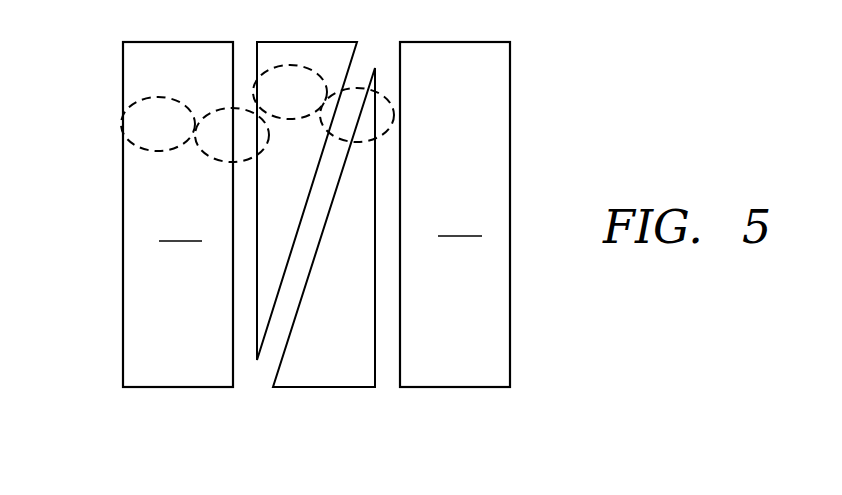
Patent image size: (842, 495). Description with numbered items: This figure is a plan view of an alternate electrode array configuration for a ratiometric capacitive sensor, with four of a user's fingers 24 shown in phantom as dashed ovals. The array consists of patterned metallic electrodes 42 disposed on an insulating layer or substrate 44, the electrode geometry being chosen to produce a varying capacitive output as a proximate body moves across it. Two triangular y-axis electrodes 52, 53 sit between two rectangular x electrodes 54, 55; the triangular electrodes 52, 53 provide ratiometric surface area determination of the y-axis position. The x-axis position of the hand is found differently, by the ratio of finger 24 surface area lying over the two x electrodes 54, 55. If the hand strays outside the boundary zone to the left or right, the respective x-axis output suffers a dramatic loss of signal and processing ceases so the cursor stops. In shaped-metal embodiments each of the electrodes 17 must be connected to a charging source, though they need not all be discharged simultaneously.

The electrodes 17 is at (518, 153).
The fingers 24 is at (126, 139).
The patterned metallic electrodes 42 is at (388, 35).
The insulating layer or substrate 44 is at (112, 444).
The triangular y-axis electrode 52 is at (270, 46).
The triangular y-axis electrode 53 is at (292, 378).
The x electrode 54 is at (132, 358).
The x electrode 55 is at (500, 313).